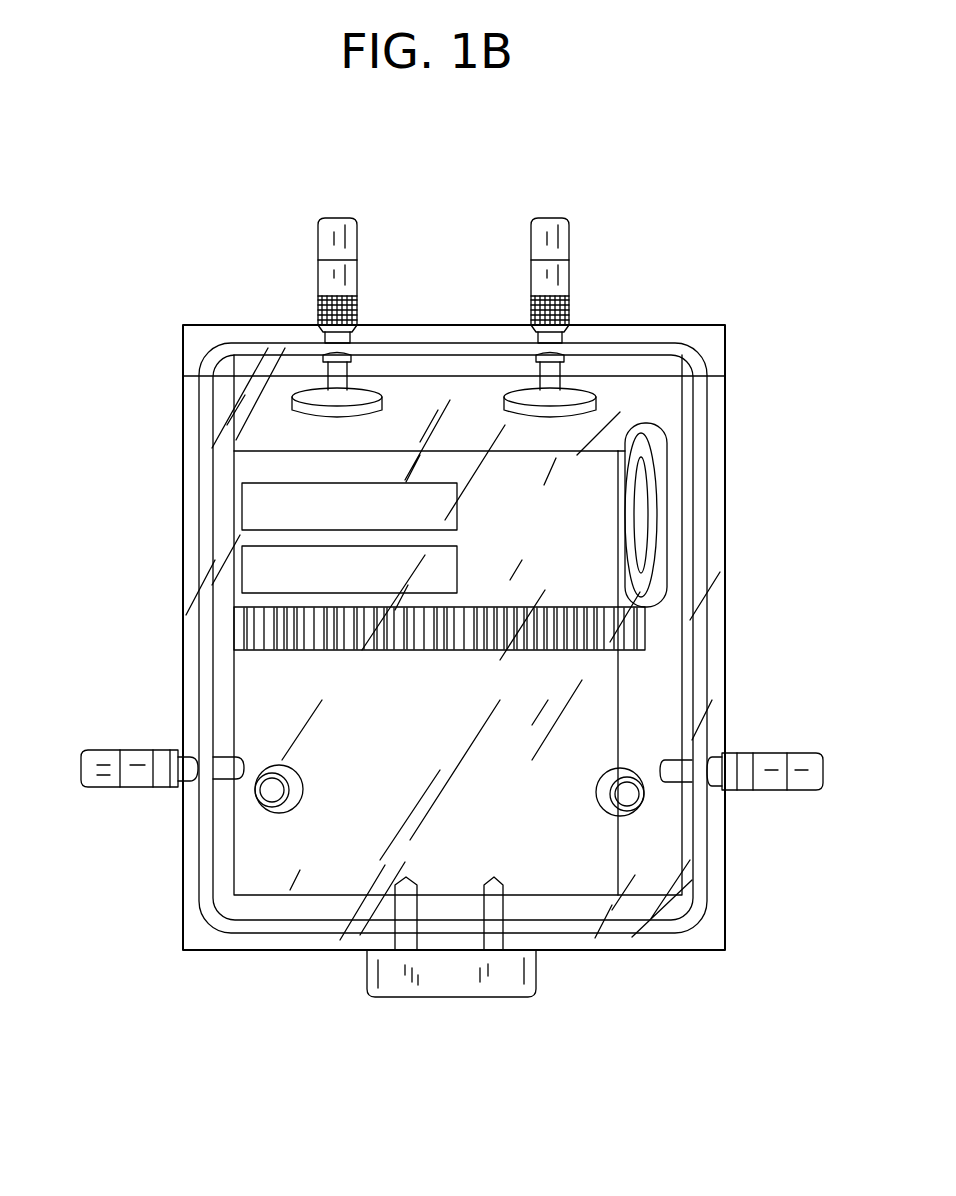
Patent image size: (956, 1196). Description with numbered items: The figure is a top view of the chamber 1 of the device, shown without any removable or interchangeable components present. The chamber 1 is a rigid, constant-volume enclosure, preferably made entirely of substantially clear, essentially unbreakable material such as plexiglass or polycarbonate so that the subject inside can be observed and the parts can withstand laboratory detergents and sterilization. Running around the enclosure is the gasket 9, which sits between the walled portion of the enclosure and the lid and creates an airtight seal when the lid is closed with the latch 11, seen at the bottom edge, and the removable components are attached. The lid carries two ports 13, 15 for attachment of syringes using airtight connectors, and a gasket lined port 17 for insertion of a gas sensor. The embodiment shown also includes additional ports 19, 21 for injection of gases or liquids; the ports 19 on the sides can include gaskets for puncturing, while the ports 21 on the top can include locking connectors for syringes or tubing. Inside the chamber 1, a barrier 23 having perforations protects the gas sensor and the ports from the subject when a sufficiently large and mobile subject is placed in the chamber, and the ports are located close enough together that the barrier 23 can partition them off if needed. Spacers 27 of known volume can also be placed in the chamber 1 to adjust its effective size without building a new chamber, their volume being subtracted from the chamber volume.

The chamber 1 is at (120, 493).
The gasket 9 is at (700, 478).
The latch 11 is at (480, 990).
The port 13 is at (300, 790).
The port 15 is at (598, 792).
The gasket lined port 17 is at (630, 452).
The additional port 19 is at (90, 752).
The additional port 21 is at (532, 300).
The barrier 23 is at (253, 628).
The spacers 27 is at (458, 560).